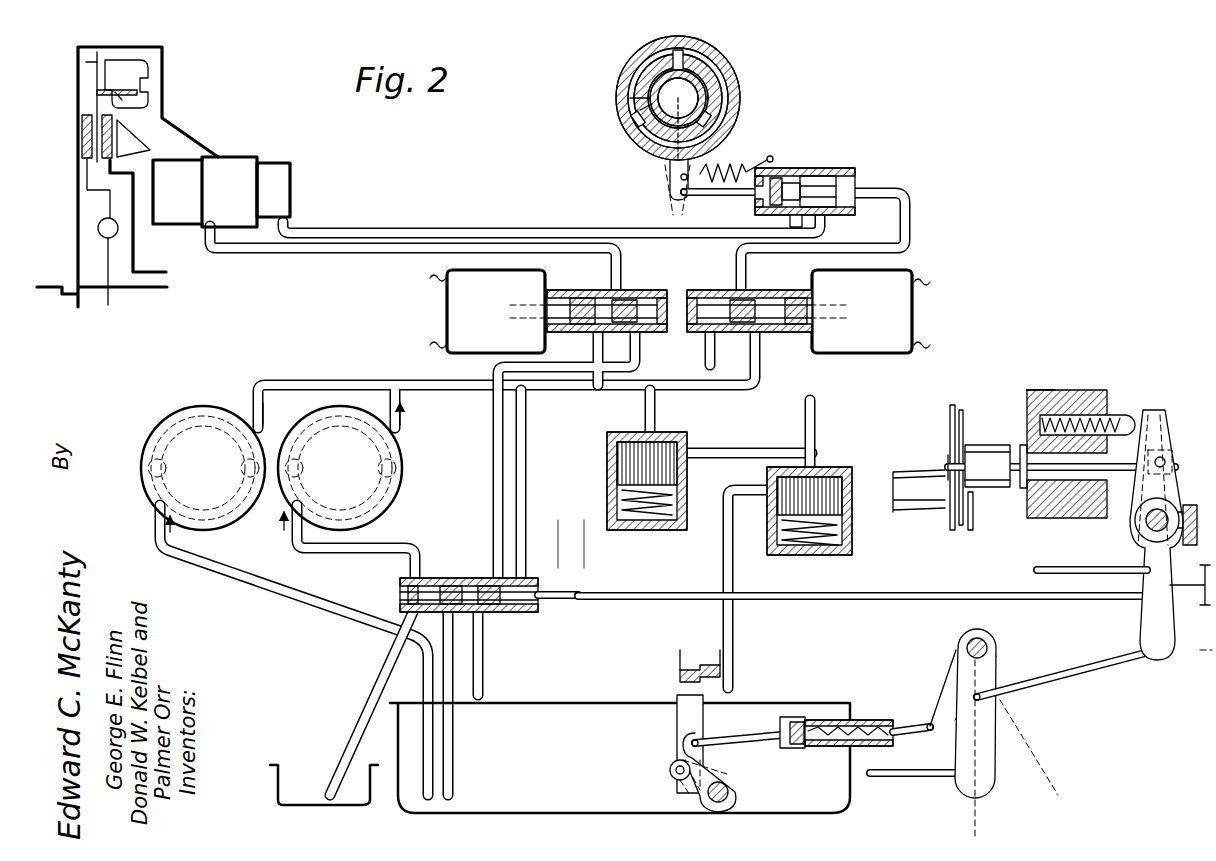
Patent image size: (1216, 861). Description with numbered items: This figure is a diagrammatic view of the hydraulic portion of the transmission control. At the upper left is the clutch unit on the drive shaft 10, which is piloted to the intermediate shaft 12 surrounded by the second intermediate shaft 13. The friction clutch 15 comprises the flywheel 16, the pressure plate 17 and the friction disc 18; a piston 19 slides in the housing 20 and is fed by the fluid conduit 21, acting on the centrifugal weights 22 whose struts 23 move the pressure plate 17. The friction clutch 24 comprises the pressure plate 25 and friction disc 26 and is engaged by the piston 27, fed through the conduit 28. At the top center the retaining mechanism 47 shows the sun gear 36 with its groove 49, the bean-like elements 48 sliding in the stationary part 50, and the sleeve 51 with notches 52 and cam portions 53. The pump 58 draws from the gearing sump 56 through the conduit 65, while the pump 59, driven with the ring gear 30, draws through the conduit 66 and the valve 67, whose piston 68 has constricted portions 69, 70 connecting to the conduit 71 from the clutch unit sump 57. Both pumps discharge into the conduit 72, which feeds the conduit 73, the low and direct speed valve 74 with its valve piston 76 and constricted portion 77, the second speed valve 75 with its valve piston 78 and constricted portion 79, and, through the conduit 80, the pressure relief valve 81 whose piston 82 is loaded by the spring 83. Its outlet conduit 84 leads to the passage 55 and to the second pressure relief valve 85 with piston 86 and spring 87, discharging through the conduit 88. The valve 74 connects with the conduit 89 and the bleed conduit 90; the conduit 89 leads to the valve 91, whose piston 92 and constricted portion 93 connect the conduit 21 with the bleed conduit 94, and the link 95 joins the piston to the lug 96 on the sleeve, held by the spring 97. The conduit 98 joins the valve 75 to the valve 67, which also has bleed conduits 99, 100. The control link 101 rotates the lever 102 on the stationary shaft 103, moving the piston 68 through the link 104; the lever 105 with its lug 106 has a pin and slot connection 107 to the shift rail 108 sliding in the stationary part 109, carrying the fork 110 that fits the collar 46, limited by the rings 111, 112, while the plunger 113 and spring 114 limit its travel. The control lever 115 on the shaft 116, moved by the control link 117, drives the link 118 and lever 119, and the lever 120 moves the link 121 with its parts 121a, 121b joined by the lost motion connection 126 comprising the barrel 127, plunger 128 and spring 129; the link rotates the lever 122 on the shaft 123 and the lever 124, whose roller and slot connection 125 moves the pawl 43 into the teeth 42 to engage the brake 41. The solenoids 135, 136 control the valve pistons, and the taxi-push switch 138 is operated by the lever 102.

The drive shaft 10 is at (60, 286).
The intermediate shaft 12 is at (143, 290).
The second intermediate shaft 13 is at (152, 270).
The friction clutch 15 is at (86, 112).
The flywheel 16 is at (77, 86).
The pressure plate 17 is at (80, 66).
The friction disc 18 is at (82, 137).
The piston 19 is at (257, 204).
The housing 20 is at (280, 162).
The fluid conduit 21 is at (344, 230).
The centrifugal weights 22 is at (126, 72).
The strut 23 is at (138, 95).
The friction clutch 24 is at (114, 160).
The pressure plate 25 is at (122, 138).
The friction disc 26 is at (120, 120).
The piston 27 is at (203, 182).
The conduit 28 is at (240, 252).
The ring gear 30 is at (710, 668).
The sun gear 36 is at (628, 146).
The brake 41 is at (676, 690).
The teeth 42 is at (678, 678).
The pawl 43 is at (680, 715).
The collar 46 is at (968, 522).
The retaining mechanism 47 is at (618, 66).
The bean-like elements 48 is at (622, 116).
The groove 49 is at (620, 95).
The stationary part 50 is at (740, 80).
The sleeve 51 is at (722, 62).
The notches 52 is at (740, 105).
The cam portions 53 is at (745, 122).
The passage 55 is at (816, 420).
The gearing sump 56 is at (562, 754).
The clutch unit sump 57 is at (276, 782).
The pump 58 is at (210, 406).
The pump 59 is at (402, 452).
The conduit 65 is at (308, 595).
The conduit 66 is at (410, 545).
The valve 67 is at (462, 578).
The piston 68 is at (545, 612).
The constricted portion 69 is at (495, 612).
The constricted portion 70 is at (412, 584).
The conduit 71 is at (392, 662).
The conduit 72 is at (326, 380).
The conduit 73 is at (527, 498).
The low and direct speed valve 74 is at (772, 290).
The second speed valve 75 is at (578, 290).
The valve piston 76 is at (795, 332).
The constricted portion 77 is at (715, 300).
The valve piston 78 is at (562, 332).
The constricted portion 79 is at (640, 300).
The conduit 80 is at (652, 406).
The pressure relief valve 81 is at (607, 470).
The piston 82 is at (635, 440).
The spring 83 is at (640, 515).
The conduit 84 is at (740, 448).
The pressure relief valve 85 is at (852, 510).
The piston 86 is at (832, 470).
The spring 87 is at (795, 545).
The conduit 88 is at (733, 572).
The conduit 89 is at (906, 219).
The conduit 90 is at (708, 352).
The valve 91 is at (840, 168).
The piston 92 is at (778, 170).
The constricted portion 93 is at (802, 176).
The bleed conduit 94 is at (803, 224).
The link 95 is at (672, 192).
The lug 96 is at (670, 177).
The spring 97 is at (740, 160).
The conduit 98 is at (496, 457).
The conduit 99 is at (484, 675).
The conduit 100 is at (454, 717).
The control link 101 is at (1058, 570).
The lever 102 is at (1181, 512).
The stationary shaft 103 is at (1145, 521).
The link 104 is at (988, 595).
The lever 105 is at (1158, 415).
The lug 106 is at (1199, 520).
The pin and slot connection 107 is at (1166, 458).
The shift rail 108 is at (1062, 505).
The stationary part 109 is at (1088, 395).
The fork 110 is at (983, 452).
The ring 111 is at (952, 458).
The ring 112 is at (1022, 447).
The plunger 113 is at (1122, 414).
The spring 114 is at (1047, 392).
The control lever 115 is at (990, 738).
The shaft 116 is at (988, 650).
The control link 117 is at (905, 782).
The link 118 is at (1060, 680).
The lever 119 is at (1150, 660).
The lever 120 is at (943, 675).
The link 121 is at (910, 708).
The part of link 121a is at (755, 734).
The part of link 121b is at (912, 740).
The lever 122 is at (732, 760).
The shaft 123 is at (728, 792).
The lever 124 is at (685, 790).
The roller and slot connection 125 is at (670, 770).
The lost motion connection 126 is at (818, 716).
The barrel 127 is at (862, 748).
The plunger 128 is at (810, 748).
The spring 129 is at (866, 716).
The solenoid 135 is at (912, 270).
The solenoid 136 is at (446, 300).
The taxi-push switch 138 is at (1185, 598).